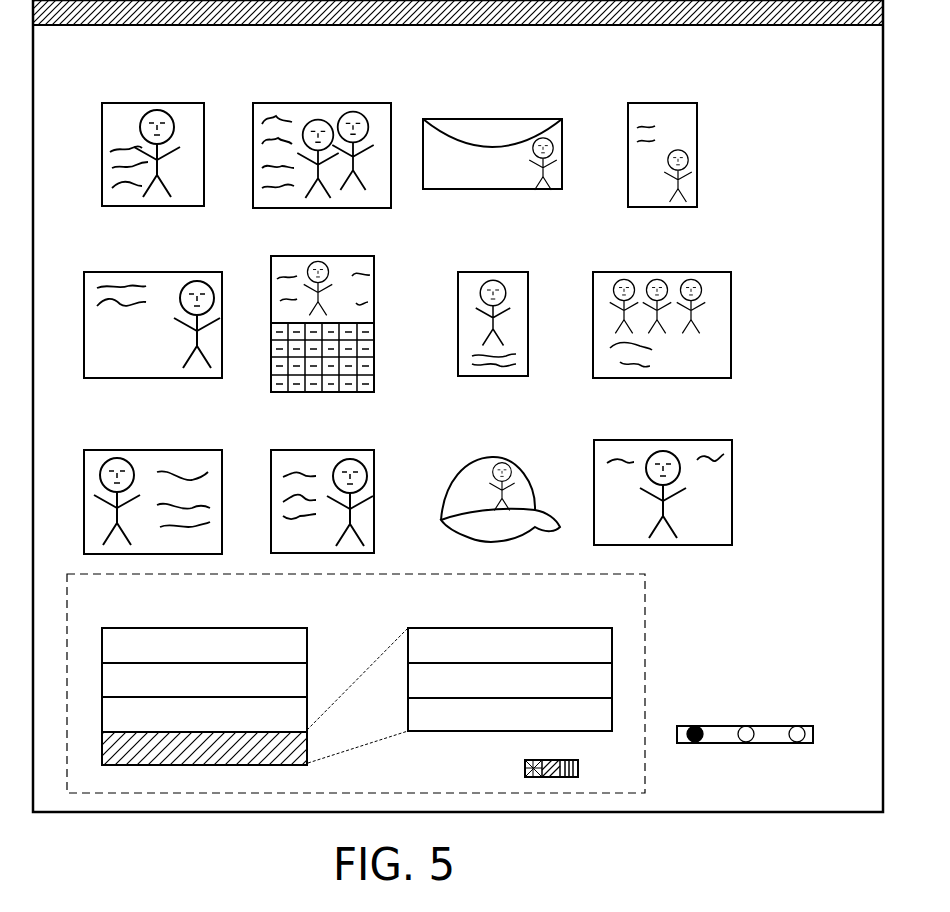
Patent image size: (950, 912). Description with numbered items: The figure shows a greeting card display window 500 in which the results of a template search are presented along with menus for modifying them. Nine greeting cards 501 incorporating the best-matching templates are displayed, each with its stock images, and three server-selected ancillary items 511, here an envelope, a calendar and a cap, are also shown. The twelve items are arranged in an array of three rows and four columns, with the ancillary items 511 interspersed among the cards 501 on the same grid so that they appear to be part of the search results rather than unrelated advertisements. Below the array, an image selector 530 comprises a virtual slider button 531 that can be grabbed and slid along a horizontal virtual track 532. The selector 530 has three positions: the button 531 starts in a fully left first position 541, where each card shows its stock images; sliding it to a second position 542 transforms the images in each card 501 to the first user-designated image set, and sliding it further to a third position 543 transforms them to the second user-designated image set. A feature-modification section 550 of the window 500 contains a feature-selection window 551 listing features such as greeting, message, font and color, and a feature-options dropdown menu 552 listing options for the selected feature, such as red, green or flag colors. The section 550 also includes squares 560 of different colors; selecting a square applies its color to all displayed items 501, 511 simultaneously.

The card display window 500 is at (818, 129).
The greeting cards 501 is at (593, 272).
The ancillary items 511 is at (445, 260).
The image selector 530 is at (770, 725).
The virtual slider button 531 is at (702, 726).
The horizontal virtual track 532 is at (813, 736).
The first position 541 is at (695, 743).
The second position 542 is at (746, 743).
The third position 543 is at (797, 743).
The feature-modification section 550 is at (386, 709).
The feature-selection window 551 is at (315, 633).
The feature-options dropdown menu 552 is at (622, 633).
The color squares 560 is at (532, 778).